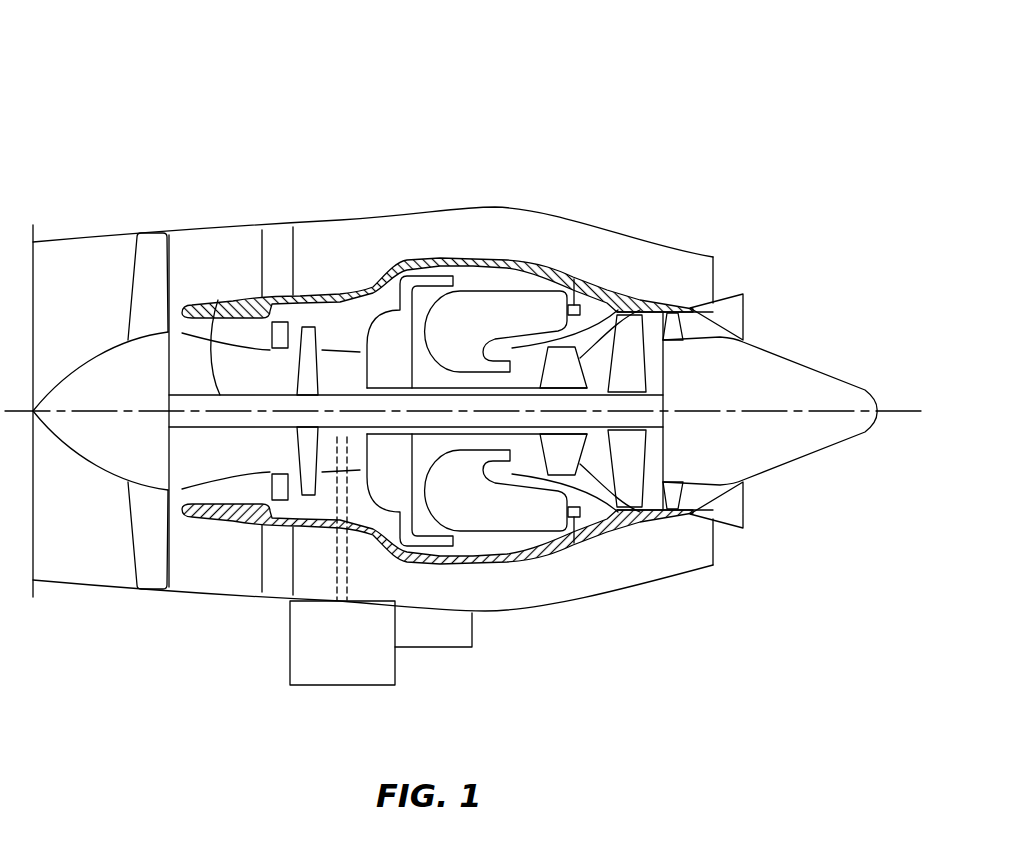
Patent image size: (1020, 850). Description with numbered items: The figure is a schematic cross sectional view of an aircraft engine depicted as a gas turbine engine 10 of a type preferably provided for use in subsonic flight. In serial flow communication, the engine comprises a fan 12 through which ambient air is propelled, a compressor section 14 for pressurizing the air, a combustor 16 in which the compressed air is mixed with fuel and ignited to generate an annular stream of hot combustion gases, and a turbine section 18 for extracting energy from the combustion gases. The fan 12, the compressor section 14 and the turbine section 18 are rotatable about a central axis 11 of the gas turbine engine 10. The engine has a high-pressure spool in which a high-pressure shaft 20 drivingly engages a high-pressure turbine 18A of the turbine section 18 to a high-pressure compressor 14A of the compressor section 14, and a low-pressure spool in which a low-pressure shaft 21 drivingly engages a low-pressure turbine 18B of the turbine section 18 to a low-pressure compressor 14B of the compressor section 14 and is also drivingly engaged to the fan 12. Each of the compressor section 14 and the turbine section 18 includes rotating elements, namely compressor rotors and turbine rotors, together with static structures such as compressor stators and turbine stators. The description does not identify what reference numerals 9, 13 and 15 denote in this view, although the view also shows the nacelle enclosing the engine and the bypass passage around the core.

The engine central longitudinal axis 9 is at (905, 410).
The gas turbine engine 10 is at (650, 112).
The central axis 11 is at (78, 230).
The fan 12 is at (145, 527).
The core cowl / exhaust duct wall 13 is at (630, 312).
The compressor section 14 is at (384, 403).
The high-pressure compressor 14A is at (387, 472).
The low-pressure compressor 14B is at (310, 455).
The bypass flow path 15 is at (533, 222).
The combustor 16 is at (500, 305).
The turbine section 18 is at (708, 390).
The high-pressure turbine 18A is at (567, 367).
The low-pressure turbine 18B is at (630, 342).
The high-pressure shaft 20 is at (440, 433).
The low-pressure shaft 21 is at (218, 300).